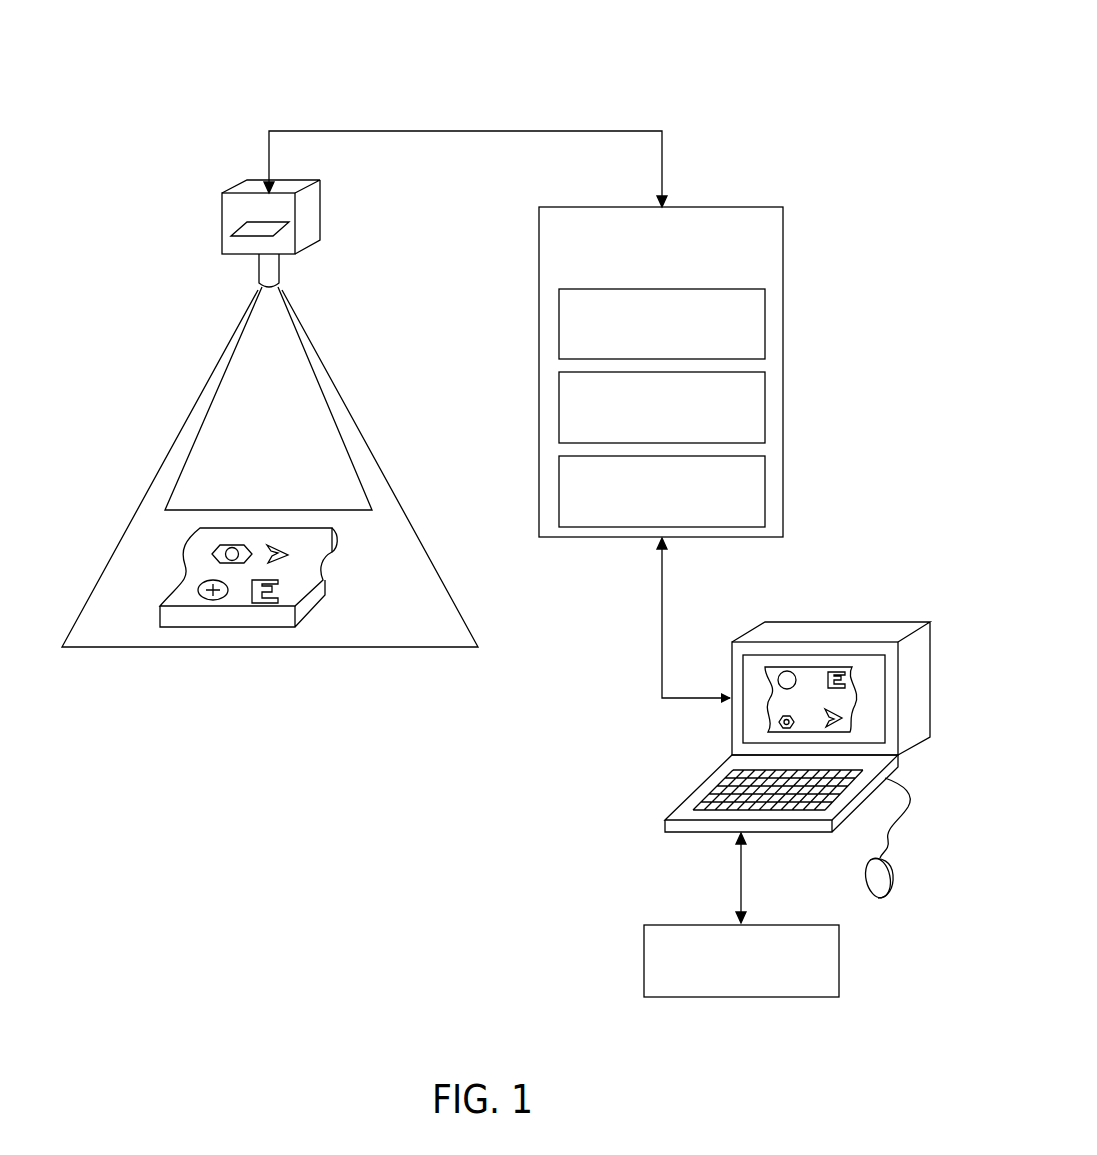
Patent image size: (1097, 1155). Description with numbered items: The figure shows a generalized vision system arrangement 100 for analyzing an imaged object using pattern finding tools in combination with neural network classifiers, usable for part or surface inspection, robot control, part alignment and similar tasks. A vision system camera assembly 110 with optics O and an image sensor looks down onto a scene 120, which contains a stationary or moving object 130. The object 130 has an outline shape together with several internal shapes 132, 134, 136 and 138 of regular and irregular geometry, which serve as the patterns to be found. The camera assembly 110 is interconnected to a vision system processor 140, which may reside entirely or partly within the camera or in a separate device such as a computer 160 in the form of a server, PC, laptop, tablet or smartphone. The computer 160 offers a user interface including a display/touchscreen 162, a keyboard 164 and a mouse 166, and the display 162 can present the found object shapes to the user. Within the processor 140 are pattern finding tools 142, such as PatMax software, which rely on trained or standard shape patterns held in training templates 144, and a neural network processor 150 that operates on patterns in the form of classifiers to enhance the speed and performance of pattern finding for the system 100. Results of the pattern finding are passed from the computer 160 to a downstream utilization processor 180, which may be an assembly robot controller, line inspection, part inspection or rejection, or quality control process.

The vision system arrangement 100 is at (634, 58).
The vision system camera assembly 110 is at (315, 213).
The optics O is at (281, 267).
The scene 120 is at (383, 658).
The object 130 is at (333, 574).
The internal shape 132 is at (280, 547).
The internal shape 134 is at (272, 603).
The internal shape 136 is at (215, 600).
The internal shape 138 is at (232, 545).
The vision system processor 140 is at (704, 326).
The pattern finding tools 142 is at (767, 322).
The training templates 144 is at (767, 490).
The neural network processor 150 is at (767, 407).
The computer 160 is at (773, 717).
The display/touchscreen 162 is at (870, 667).
The keyboard 164 is at (713, 793).
The mouse 166 is at (888, 882).
The utilization process(or) 180 is at (644, 960).